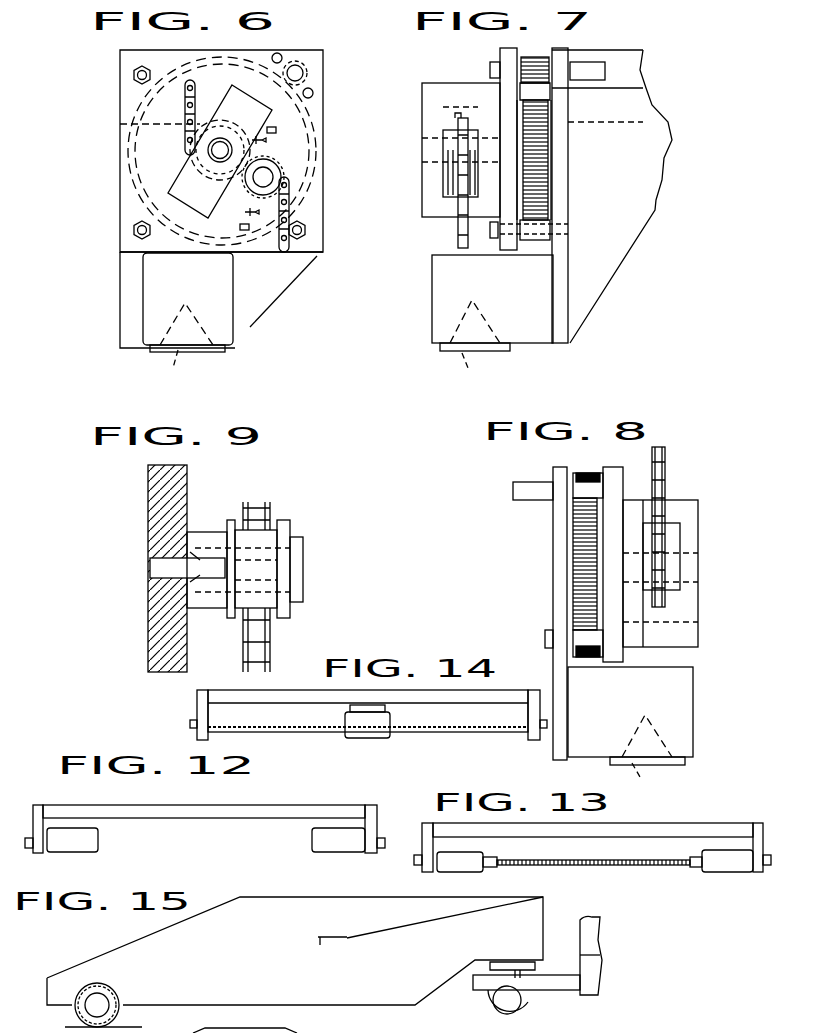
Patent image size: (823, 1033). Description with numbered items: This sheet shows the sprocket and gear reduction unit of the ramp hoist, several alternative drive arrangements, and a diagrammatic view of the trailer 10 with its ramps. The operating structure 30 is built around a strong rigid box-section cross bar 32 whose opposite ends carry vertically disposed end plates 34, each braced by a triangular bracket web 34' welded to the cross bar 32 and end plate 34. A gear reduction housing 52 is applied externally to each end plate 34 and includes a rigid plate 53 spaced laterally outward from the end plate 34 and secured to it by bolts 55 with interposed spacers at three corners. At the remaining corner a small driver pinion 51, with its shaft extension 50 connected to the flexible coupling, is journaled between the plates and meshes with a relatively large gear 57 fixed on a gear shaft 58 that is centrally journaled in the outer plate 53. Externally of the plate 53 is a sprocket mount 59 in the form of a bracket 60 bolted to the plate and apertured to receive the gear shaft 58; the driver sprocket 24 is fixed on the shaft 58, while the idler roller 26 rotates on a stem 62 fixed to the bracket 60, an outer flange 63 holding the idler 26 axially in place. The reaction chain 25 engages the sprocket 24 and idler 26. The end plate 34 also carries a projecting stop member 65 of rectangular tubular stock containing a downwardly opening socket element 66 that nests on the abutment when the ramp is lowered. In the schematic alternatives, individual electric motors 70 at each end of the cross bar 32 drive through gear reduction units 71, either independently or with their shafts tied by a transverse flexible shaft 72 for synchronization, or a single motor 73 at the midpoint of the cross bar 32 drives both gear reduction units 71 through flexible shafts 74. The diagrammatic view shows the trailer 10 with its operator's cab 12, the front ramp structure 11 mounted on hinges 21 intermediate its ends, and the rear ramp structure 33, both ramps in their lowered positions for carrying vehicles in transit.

In FIG. 15, the trailer 10 is at (555, 905).
In FIG. 15, the front ramp structure 11 is at (393, 925).
In FIG. 15, the operator's cab 12 is at (595, 925).
In FIG. 15, the hinges 21 is at (462, 900).
In FIG. 6, the driver sprocket 24 is at (182, 172).
In FIG. 6, the reaction chain 25 is at (186, 85).
In FIG. 7, the reaction chain 25 is at (456, 232).
In FIG. 9, the reaction chain 25 is at (270, 632).
In FIG. 8, the reaction chain 25 is at (665, 470).
In FIG. 6, the idler roller 26 is at (272, 170).
In FIG. 9, the idler roller 26 is at (288, 528).
In FIG. 15, the operating structure 30 is at (322, 940).
In FIG. 6, the cross bar 32 is at (130, 140).
In FIG. 7, the cross bar 32 is at (637, 64).
In FIG. 14, the cross bar 32 is at (275, 692).
In FIG. 12, the cross bar 32 is at (262, 812).
In FIG. 13, the cross bar 32 is at (715, 808).
In FIG. 15, the rear ramp structure 33 is at (178, 920).
In FIG. 6, the end plate 34 is at (231, 276).
In FIG. 7, the end plate 34 is at (558, 195).
In FIG. 8, the end plate 34 is at (539, 613).
In FIG. 7, the triangular bracket web 34' is at (637, 196).
In FIG. 7, the shaft extension 50 is at (596, 72).
In FIG. 7, the driver pinion 51 is at (530, 58).
In FIG. 6, the gear reduction housing 52 is at (327, 196).
In FIG. 6, the rigid plate 53 is at (126, 234).
In FIG. 7, the rigid plate 53 is at (498, 58).
In FIG. 8, the rigid plate 53 is at (612, 468).
In FIG. 6, the bolts 55 is at (134, 226).
In FIG. 7, the bolts 55 is at (489, 74).
In FIG. 7, the gear 57 is at (540, 178).
In FIG. 8, the gear 57 is at (575, 535).
In FIG. 6, the gear shaft 58 is at (208, 150).
In FIG. 7, the gear shaft 58 is at (527, 148).
In FIG. 8, the gear shaft 58 is at (575, 572).
In FIG. 6, the sprocket mount 59 is at (236, 98).
In FIG. 7, the sprocket mount 59 is at (437, 95).
In FIG. 8, the sprocket mount 59 is at (688, 518).
In FIG. 9, the bracket 60 is at (187, 495).
In FIG. 9, the stem 62 is at (150, 578).
In FIG. 9, the outer flange 63 is at (300, 562).
In FIG. 6, the stop member 65 is at (227, 313).
In FIG. 7, the stop member 65 is at (525, 305).
In FIG. 8, the stop member 65 is at (670, 710).
In FIG. 6, the socket element 66 is at (186, 342).
In FIG. 7, the socket element 66 is at (475, 341).
In FIG. 8, the socket element 66 is at (647, 753).
In FIG. 12, the electric motors 70 is at (88, 846).
In FIG. 13, the electric motors 70 is at (455, 865).
In FIG. 14, the gear reduction unit 71 is at (200, 700).
In FIG. 12, the gear reduction unit 71 is at (30, 810).
In FIG. 13, the gear reduction unit 71 is at (425, 835).
In FIG. 13, the flexible shaft 72 is at (678, 865).
In FIG. 14, the motor 73 is at (375, 730).
In FIG. 14, the flexible shafts 74 is at (313, 732).